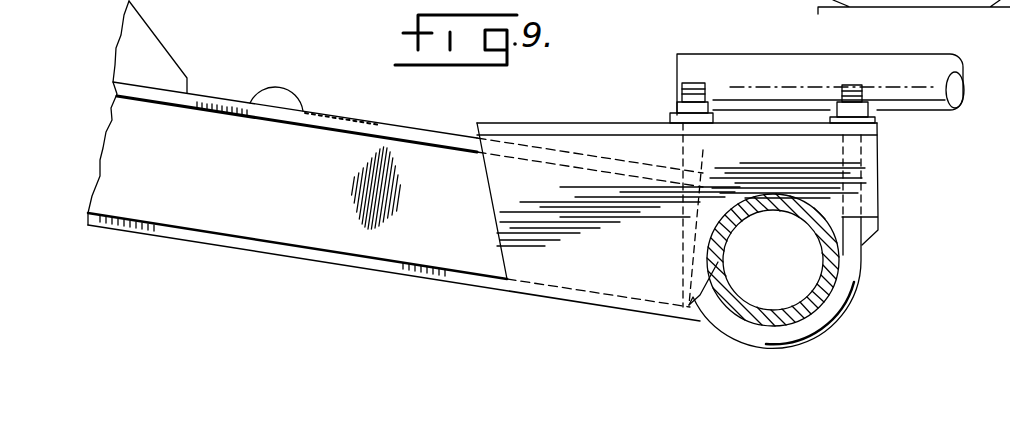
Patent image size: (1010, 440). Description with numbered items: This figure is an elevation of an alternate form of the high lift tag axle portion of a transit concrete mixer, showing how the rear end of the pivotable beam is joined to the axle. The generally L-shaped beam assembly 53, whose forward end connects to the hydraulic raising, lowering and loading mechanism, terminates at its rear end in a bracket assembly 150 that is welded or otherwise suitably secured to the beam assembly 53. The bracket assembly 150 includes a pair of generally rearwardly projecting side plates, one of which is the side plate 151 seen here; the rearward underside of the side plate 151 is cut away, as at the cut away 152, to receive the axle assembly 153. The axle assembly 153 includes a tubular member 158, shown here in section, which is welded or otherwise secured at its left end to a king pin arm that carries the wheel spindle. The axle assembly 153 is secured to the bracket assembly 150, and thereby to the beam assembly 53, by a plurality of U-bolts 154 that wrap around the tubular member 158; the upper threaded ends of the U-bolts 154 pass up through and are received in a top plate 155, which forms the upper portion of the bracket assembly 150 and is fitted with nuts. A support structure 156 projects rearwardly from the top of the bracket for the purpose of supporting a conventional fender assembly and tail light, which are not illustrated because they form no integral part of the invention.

The beam assembly 53 is at (250, 252).
The bracket assembly 150 is at (653, 183).
The side plate 151 is at (493, 226).
The cut away 152 is at (808, 208).
The axle assembly 153 is at (806, 233).
The U-bolts 154 is at (853, 302).
The top plate 155 is at (627, 98).
The support structure 156 is at (966, 76).
The tubular member 158 is at (737, 305).